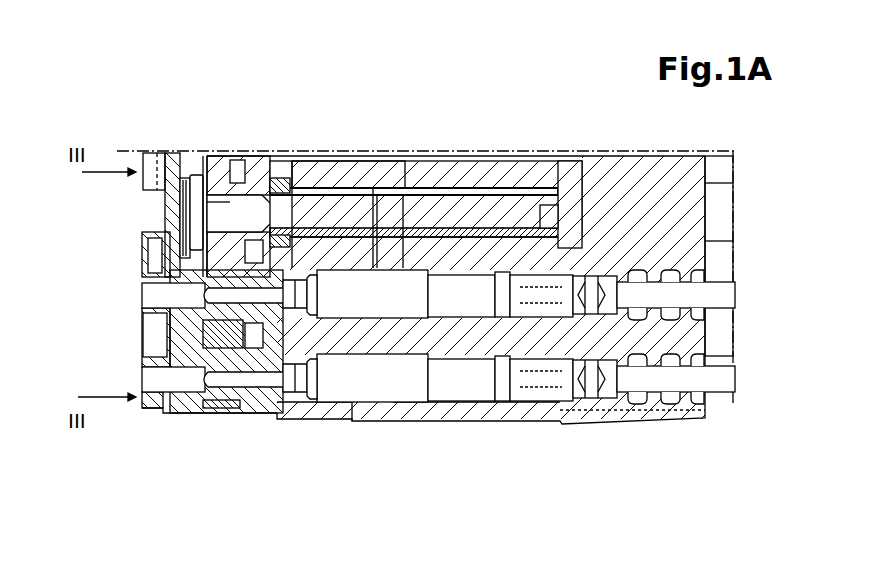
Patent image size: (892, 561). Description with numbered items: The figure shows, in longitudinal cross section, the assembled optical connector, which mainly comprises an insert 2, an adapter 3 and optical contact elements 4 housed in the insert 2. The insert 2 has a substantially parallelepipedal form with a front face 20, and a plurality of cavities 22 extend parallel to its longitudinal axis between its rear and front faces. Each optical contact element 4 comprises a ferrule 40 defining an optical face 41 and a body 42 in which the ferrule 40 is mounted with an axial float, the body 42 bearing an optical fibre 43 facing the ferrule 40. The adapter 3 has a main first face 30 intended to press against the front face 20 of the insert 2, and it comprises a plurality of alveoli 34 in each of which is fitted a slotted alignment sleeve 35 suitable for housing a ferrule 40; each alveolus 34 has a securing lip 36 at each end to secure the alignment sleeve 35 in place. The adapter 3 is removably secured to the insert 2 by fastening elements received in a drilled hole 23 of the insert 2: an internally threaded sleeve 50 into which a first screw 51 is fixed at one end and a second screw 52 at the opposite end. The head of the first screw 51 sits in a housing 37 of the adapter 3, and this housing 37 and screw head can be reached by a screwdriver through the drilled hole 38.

The insert 2 is at (482, 146).
The adapter 3 is at (181, 158).
The optical contact element 4 is at (394, 414).
The front face 20 is at (240, 163).
The cavity 22 is at (276, 417).
The drilled hole 23 is at (336, 157).
The main first face 30 is at (240, 414).
The alveolus 34 is at (140, 254).
The alignment sleeve 35 is at (147, 295).
The securing lip 36 is at (142, 361).
The housing 37 is at (258, 160).
The drilled hole 38 is at (167, 200).
The ferrule 40 is at (265, 470).
The optical face 41 is at (194, 400).
The body 42 is at (398, 170).
The optical fibre 43 is at (733, 297).
The internally threaded sleeve 50 is at (283, 176).
The first screw 51 is at (224, 160).
The second screw 52 is at (556, 163).